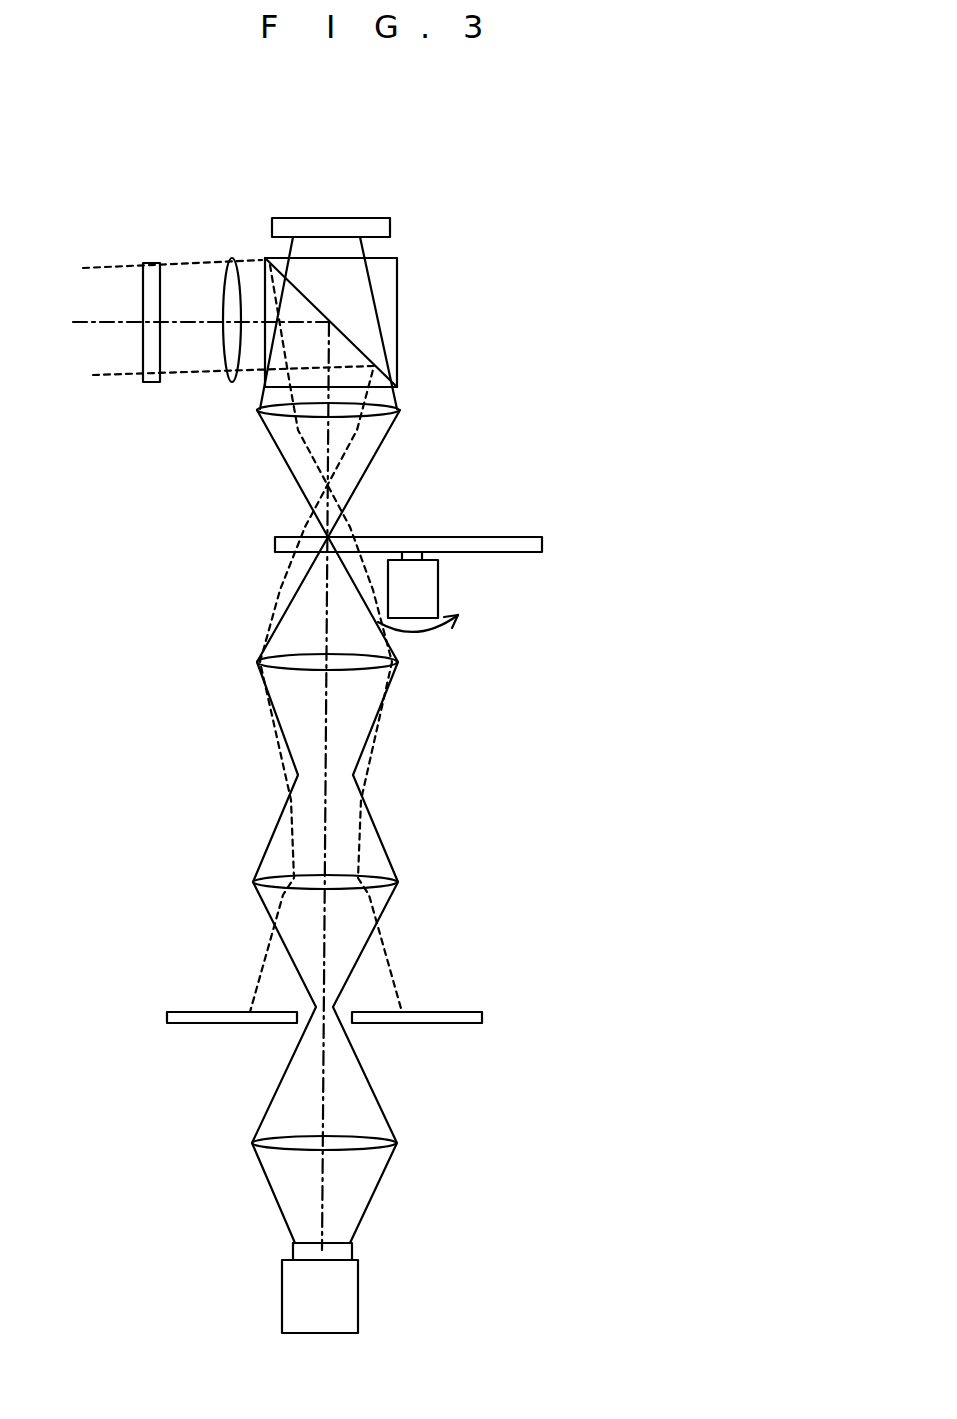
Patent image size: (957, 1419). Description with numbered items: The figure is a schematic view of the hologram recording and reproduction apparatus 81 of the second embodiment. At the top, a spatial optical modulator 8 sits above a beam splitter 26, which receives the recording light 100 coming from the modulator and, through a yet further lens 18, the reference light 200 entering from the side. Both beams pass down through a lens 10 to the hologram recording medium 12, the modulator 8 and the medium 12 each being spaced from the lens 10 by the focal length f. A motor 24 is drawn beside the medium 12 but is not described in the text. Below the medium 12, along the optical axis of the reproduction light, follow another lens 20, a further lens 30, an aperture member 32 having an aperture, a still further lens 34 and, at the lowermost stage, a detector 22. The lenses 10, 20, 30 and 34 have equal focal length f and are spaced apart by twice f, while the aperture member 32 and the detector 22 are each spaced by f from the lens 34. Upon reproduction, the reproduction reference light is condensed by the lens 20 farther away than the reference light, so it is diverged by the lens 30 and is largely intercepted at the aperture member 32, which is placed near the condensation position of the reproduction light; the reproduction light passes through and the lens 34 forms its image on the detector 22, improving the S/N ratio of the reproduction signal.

The spatial optical modulator 8 is at (379, 218).
The recording light 100 is at (373, 293).
The beam splitter 26 is at (398, 330).
The hologram recording and reproduction apparatus 81 is at (713, 338).
The reference light 200 is at (93, 375).
The lens 18 is at (223, 370).
The lens 10 is at (260, 407).
The hologram recording medium 12 is at (510, 537).
The motor 24 is at (440, 579).
The lens 20 is at (257, 662).
The lens 30 is at (255, 882).
The aperture member 32 is at (460, 1012).
The lens 34 is at (253, 1143).
The detector 22 is at (358, 1285).